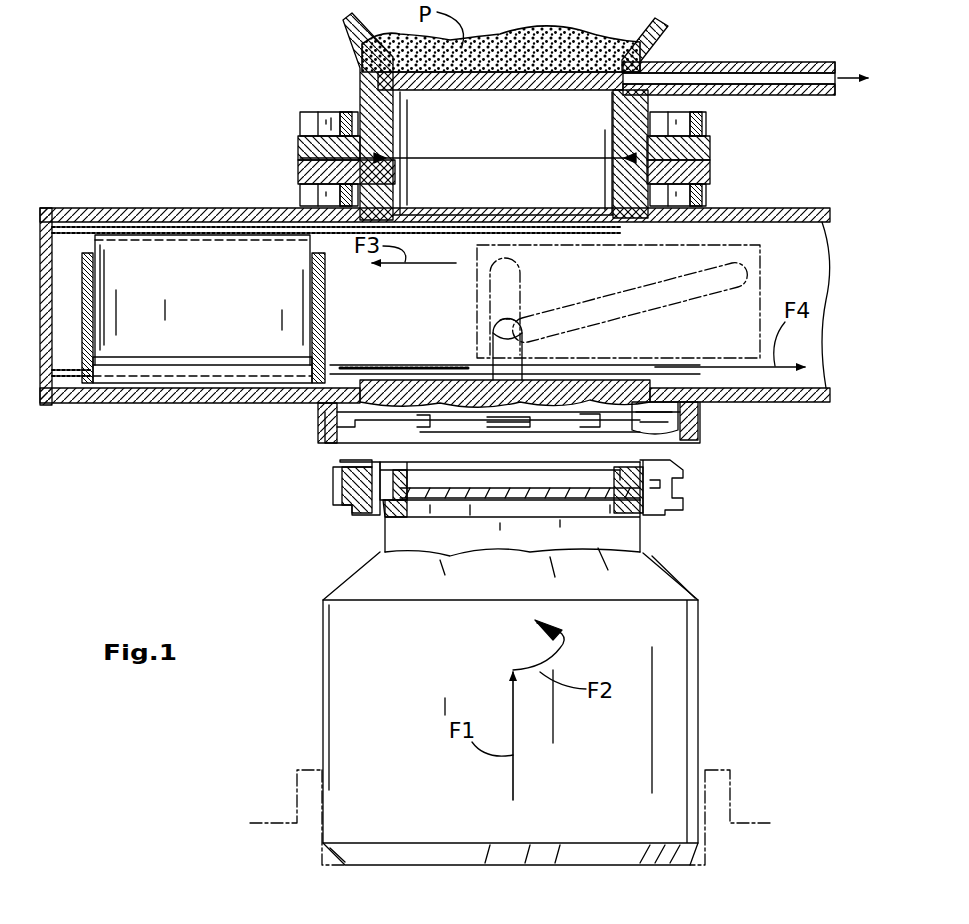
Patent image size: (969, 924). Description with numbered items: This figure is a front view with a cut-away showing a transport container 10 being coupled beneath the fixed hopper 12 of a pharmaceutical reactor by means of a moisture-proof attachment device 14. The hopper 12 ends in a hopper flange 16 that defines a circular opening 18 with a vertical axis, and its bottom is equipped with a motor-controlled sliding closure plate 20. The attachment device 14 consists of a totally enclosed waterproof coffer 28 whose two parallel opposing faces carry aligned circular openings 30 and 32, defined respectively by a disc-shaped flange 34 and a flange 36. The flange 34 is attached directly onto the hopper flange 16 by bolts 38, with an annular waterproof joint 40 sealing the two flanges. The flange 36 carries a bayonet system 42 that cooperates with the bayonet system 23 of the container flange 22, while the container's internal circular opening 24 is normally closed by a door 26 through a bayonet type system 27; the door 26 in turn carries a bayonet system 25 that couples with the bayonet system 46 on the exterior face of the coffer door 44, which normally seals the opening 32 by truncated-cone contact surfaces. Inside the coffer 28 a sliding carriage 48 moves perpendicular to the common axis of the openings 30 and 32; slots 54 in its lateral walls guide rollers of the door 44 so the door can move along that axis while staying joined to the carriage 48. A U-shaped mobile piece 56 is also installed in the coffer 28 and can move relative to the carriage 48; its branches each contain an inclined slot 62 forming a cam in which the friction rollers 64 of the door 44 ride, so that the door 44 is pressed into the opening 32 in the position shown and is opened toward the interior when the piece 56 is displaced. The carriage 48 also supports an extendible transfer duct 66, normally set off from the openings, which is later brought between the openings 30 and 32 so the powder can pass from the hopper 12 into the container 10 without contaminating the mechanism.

The transport container 10 is at (320, 678).
The fixed hopper 12 is at (338, 44).
The moisture-proof attachment device 14 is at (125, 205).
The hopper flange 16 is at (300, 146).
The hopper opening 18 is at (400, 118).
The sliding closure plate 20 is at (520, 82).
The container flange 22 is at (340, 488).
The bayonet system of the container flange 23 is at (340, 468).
The internal circular opening 24 is at (640, 536).
The bayonet system of the container door 25 is at (513, 467).
The container door 26 is at (462, 510).
The bayonet type system 27 is at (645, 486).
The waterproof coffer 28 is at (200, 403).
The coffer opening facing the hopper 30 is at (610, 205).
The coffer opening facing the container 32 is at (690, 420).
The disc-shaped flange 34 is at (708, 172).
The coffer flange with bayonet 36 is at (318, 412).
The bolts 38 is at (330, 118).
The annular waterproof joint 40 is at (398, 178).
The bayonet system of the coffer flange 42 is at (360, 434).
The coffer door 44 is at (620, 360).
The bayonet system of the coffer door 46 is at (600, 443).
The sliding carriage 48 is at (70, 382).
The slots 54 is at (490, 288).
The mobile piece 56 is at (762, 305).
The inclined slot 62 is at (640, 290).
The friction rollers 64 is at (495, 325).
The extendible transfer duct 66 is at (78, 283).